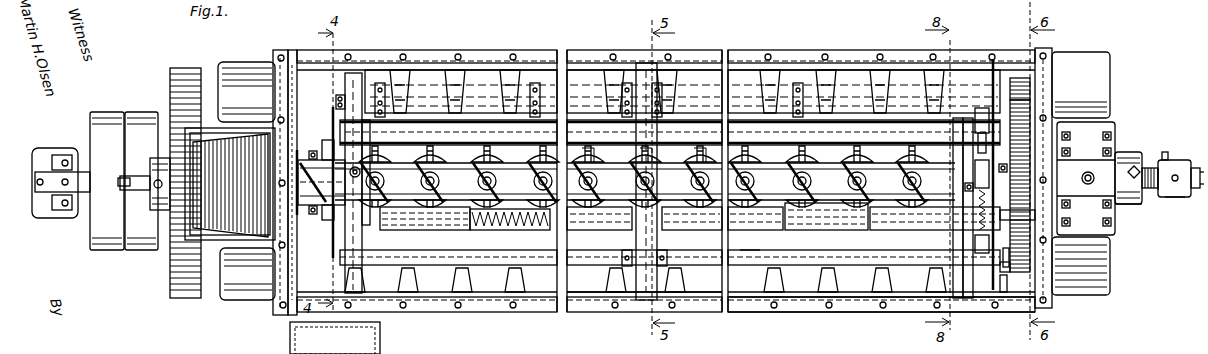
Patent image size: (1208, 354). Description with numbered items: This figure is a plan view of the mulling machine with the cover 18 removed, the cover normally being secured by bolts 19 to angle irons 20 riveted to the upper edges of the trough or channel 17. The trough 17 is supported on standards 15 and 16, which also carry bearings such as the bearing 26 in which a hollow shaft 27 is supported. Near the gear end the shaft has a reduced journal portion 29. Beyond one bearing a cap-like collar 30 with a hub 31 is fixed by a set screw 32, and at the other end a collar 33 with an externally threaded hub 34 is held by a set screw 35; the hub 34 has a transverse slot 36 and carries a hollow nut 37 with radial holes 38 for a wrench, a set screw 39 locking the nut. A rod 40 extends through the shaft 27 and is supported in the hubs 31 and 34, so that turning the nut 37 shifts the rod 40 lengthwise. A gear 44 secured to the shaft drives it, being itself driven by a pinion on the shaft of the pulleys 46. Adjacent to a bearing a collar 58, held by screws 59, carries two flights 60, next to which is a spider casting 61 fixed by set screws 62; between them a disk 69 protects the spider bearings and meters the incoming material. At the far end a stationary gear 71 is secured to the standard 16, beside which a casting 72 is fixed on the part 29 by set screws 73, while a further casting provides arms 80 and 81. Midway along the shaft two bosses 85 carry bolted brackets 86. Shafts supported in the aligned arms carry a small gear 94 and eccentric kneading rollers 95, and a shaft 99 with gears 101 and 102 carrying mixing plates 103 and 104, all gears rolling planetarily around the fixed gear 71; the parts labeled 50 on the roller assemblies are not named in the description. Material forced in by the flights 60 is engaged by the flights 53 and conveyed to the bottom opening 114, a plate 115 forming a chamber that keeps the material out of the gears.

The standard 15 is at (238, 62).
The standard 16 is at (1105, 270).
The trough or channel 17 is at (600, 297).
The cover 18 is at (881, 325).
The bolts 19 is at (881, 333).
The angle irons 20 is at (283, 292).
The bearing 26 is at (1087, 164).
The hollow shaft 27 is at (447, 139).
The reduced portion of shaft 29 is at (230, 184).
The collar 30 is at (160, 210).
The hub 31 is at (150, 178).
The set screw 32 is at (157, 180).
The collar 33 is at (1135, 152).
The hub 34 is at (1150, 168).
The set screw 35 is at (1127, 178).
The transverse slot 36 is at (1148, 202).
The hollow nut 37 is at (1163, 200).
The radial holes 38 is at (1175, 197).
The set screw 39 is at (1168, 160).
The rod 40 is at (1195, 188).
The gear 44 is at (170, 72).
The pulleys 46 is at (112, 112).
The bearing cap 50 is at (614, 162).
The flights 53 is at (403, 78).
The collar 58 is at (314, 158).
The screws 59 is at (323, 140).
The flights 60 is at (348, 82).
The casting 61 is at (352, 208).
The set screws 62 is at (360, 173).
The disk 69 is at (332, 246).
The stationary gear 71 is at (1031, 130).
The casting 72 is at (1000, 115).
The set screws 73 is at (996, 175).
The arm 80 is at (957, 200).
The arm 81 is at (975, 112).
The bosses 85 is at (644, 150).
The brackets 86 is at (641, 85).
The small gear 94 is at (1036, 216).
The eccentric rollers 95 is at (470, 237).
The shaft 99 is at (712, 266).
The gear 101 is at (1031, 262).
The gear 102 is at (1031, 88).
The mixing plate 103 is at (752, 258).
The mixing plate 104 is at (533, 82).
The bottom opening 114 is at (968, 250).
The plate 115 is at (1002, 290).